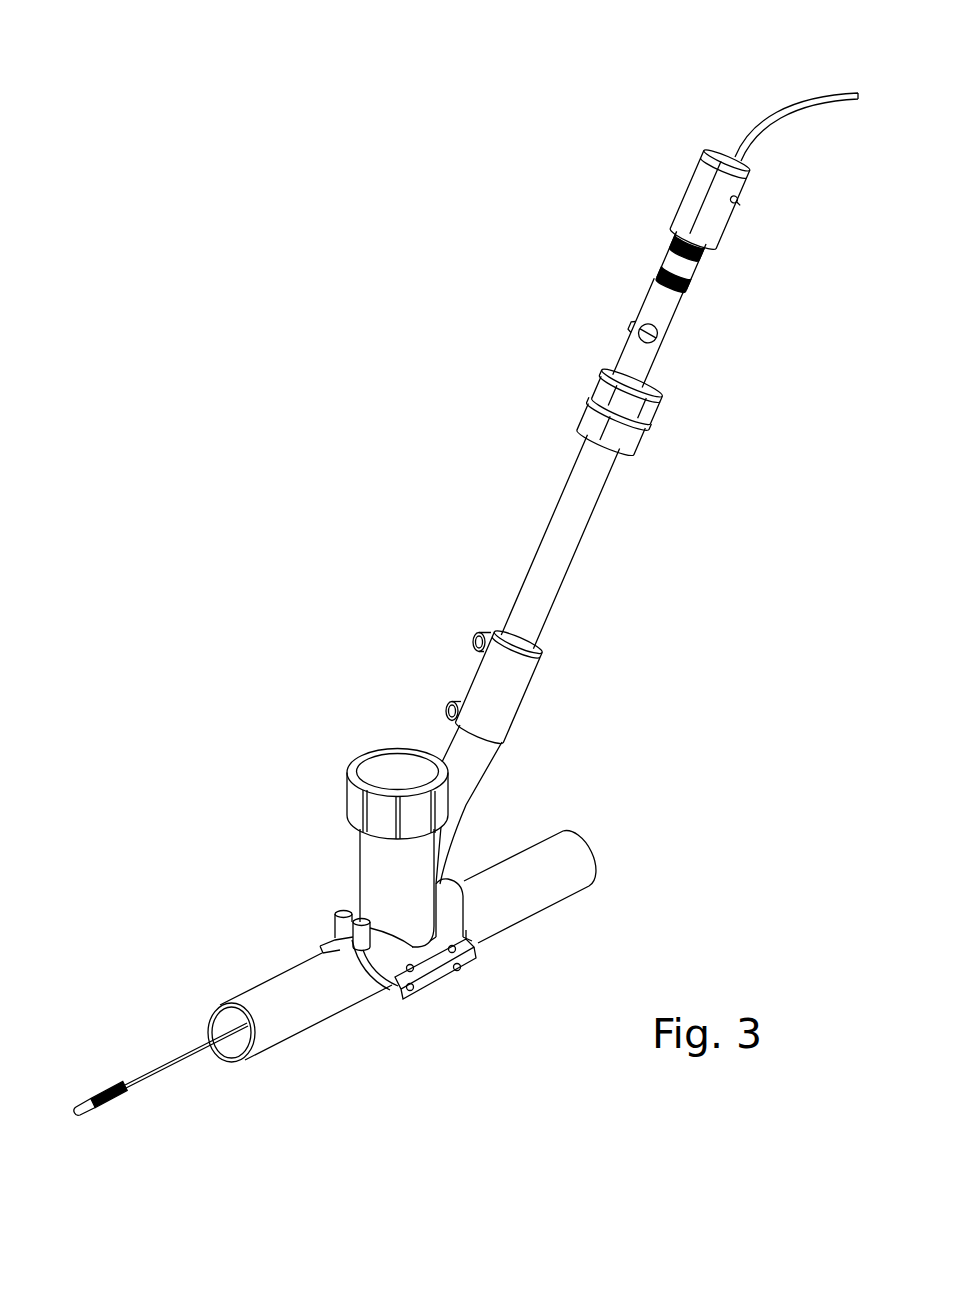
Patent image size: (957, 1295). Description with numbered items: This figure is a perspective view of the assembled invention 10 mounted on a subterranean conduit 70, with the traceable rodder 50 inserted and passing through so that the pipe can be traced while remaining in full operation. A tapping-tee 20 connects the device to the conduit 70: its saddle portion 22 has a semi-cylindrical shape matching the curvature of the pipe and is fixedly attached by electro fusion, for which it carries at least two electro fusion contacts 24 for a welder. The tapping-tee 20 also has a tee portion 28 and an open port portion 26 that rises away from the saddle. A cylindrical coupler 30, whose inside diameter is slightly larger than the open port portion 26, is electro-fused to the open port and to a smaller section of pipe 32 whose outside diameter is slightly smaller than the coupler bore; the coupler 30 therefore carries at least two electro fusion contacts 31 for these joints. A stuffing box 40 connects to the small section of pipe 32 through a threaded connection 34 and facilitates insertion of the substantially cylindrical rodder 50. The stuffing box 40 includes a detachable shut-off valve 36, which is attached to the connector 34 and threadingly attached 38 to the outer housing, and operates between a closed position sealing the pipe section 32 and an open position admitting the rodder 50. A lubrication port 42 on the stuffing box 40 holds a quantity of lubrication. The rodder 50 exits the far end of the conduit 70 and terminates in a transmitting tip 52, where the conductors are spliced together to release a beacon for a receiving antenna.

The invention 10 is at (333, 318).
The tapping-tee 20 is at (293, 840).
The saddle portion 22 is at (452, 910).
The electro fusion contacts 24 is at (362, 940).
The open port portion 26 is at (466, 776).
The tee portion 28 is at (378, 852).
The coupler 30 is at (508, 688).
The electro fusion contacts 31 is at (472, 643).
The small section of pipe 32 is at (568, 525).
The threaded connection 34 is at (637, 437).
The shut-off valve 36 is at (658, 337).
The threaded attachment 38 is at (690, 268).
The stuffing box 40 is at (727, 223).
The lubrication port 42 is at (742, 204).
The traceable rodder 50 is at (822, 86).
The transmitting tip 52 is at (97, 1108).
The conduit 70 is at (572, 857).